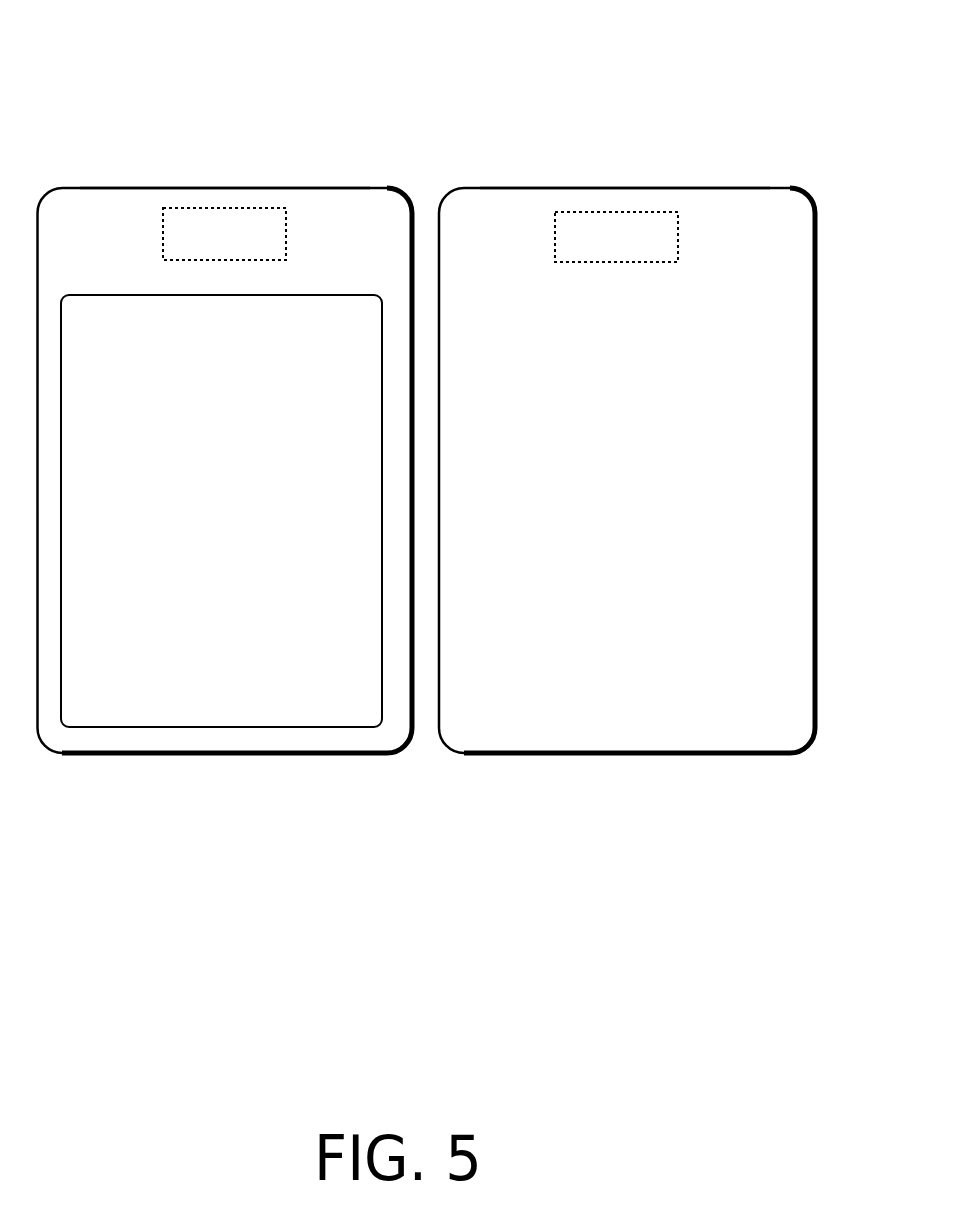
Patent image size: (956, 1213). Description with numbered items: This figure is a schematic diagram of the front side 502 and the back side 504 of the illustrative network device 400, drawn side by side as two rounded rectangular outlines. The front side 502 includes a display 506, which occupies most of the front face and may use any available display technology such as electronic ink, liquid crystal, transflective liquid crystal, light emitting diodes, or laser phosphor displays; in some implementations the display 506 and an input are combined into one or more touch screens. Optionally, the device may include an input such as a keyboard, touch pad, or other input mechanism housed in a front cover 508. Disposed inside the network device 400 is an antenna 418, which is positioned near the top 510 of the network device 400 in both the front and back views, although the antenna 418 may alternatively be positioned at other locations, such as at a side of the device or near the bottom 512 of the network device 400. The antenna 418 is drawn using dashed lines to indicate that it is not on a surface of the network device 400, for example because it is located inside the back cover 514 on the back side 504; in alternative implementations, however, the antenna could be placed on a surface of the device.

The network device 400 is at (410, 182).
The front side 502 is at (197, 125).
The back side 504 is at (607, 125).
The display 506 is at (274, 522).
The front cover 508 is at (413, 762).
The top of network device 510 is at (750, 174).
The bottom of network device 512 is at (773, 788).
The back cover 514 is at (808, 765).
The antenna 418 is at (209, 256).